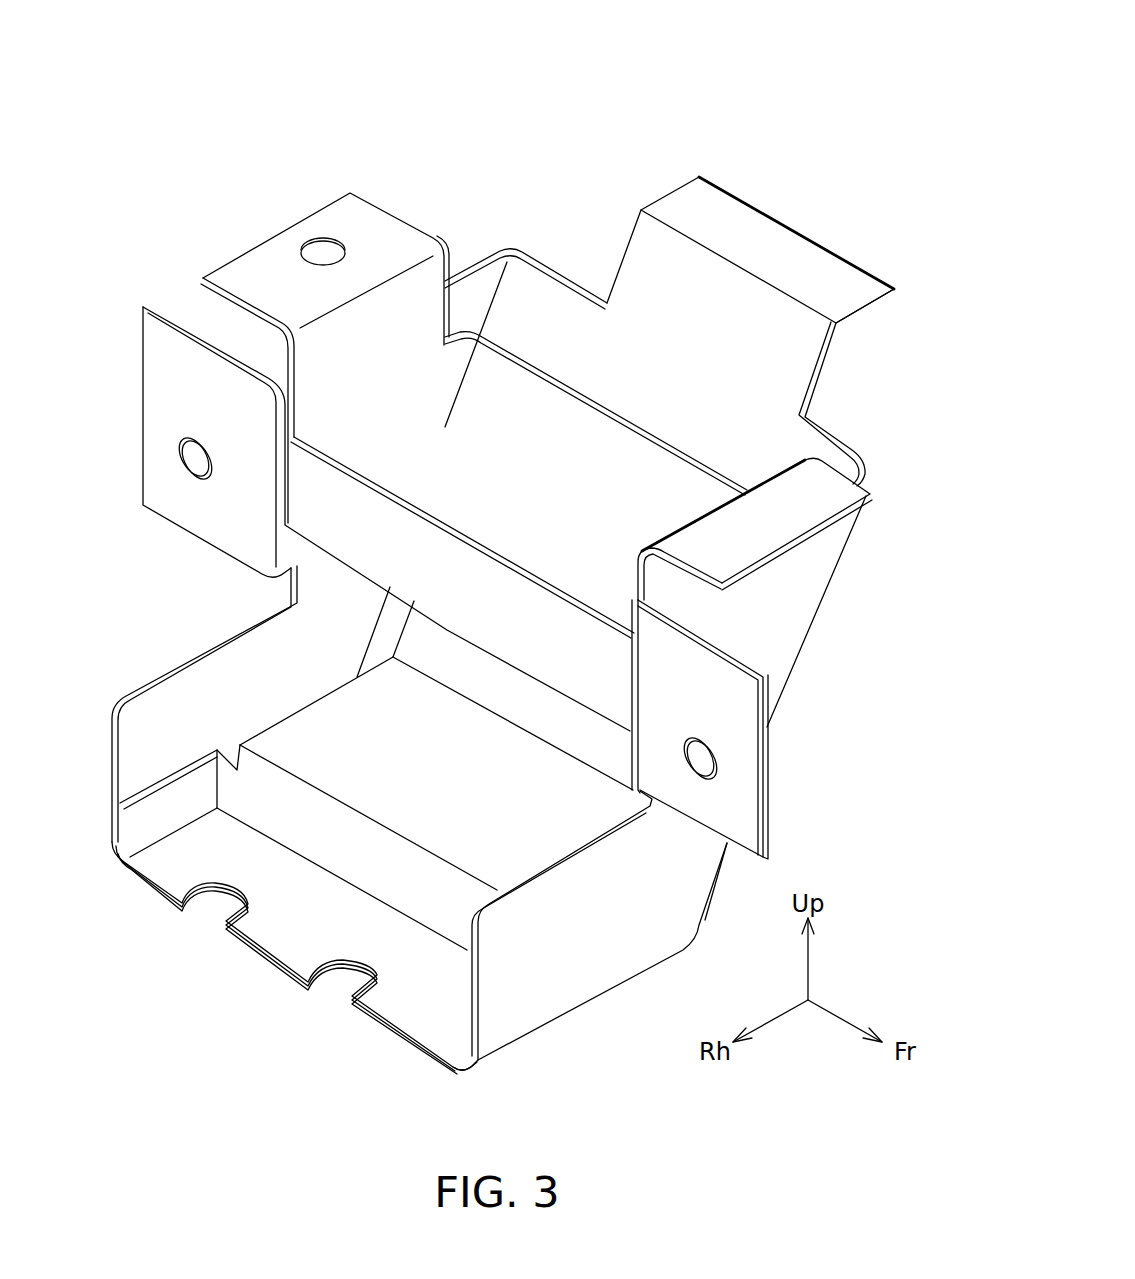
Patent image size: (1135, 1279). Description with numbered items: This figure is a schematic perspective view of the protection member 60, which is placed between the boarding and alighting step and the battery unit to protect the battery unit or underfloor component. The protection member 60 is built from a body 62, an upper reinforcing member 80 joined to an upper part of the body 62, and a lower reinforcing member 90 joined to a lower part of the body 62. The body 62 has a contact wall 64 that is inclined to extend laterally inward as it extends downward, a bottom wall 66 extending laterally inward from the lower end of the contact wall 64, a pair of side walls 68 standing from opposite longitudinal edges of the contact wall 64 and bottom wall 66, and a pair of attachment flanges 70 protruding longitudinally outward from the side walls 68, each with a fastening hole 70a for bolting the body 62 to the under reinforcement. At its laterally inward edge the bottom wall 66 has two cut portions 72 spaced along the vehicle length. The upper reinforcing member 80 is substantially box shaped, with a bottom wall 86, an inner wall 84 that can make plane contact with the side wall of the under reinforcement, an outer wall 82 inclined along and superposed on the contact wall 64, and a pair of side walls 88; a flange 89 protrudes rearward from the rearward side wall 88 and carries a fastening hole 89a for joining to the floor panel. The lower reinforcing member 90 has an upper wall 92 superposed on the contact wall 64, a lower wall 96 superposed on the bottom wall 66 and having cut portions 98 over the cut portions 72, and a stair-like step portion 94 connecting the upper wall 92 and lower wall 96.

The protection member 60 is at (514, 558).
The body 62 is at (514, 527).
The contact wall 64 is at (553, 313).
The bottom wall 66 is at (294, 958).
The side walls 68 is at (140, 731).
The attachment flange 70 is at (170, 442).
The fastening hole 70a is at (192, 462).
The cut portions 72 is at (197, 912).
The upper reinforcing member 80 is at (567, 442).
The outer wall 82 is at (662, 480).
The inner wall 84 is at (330, 502).
The bottom wall 86 is at (490, 520).
The side walls 88 is at (397, 331).
The flange 89 is at (268, 263).
The fastening hole 89a is at (322, 252).
The lower reinforcing member 90 is at (427, 836).
The upper wall 92 is at (620, 753).
The step portion 94 is at (503, 857).
The lower wall 96 is at (447, 1028).
The cut portions 98 is at (200, 892).